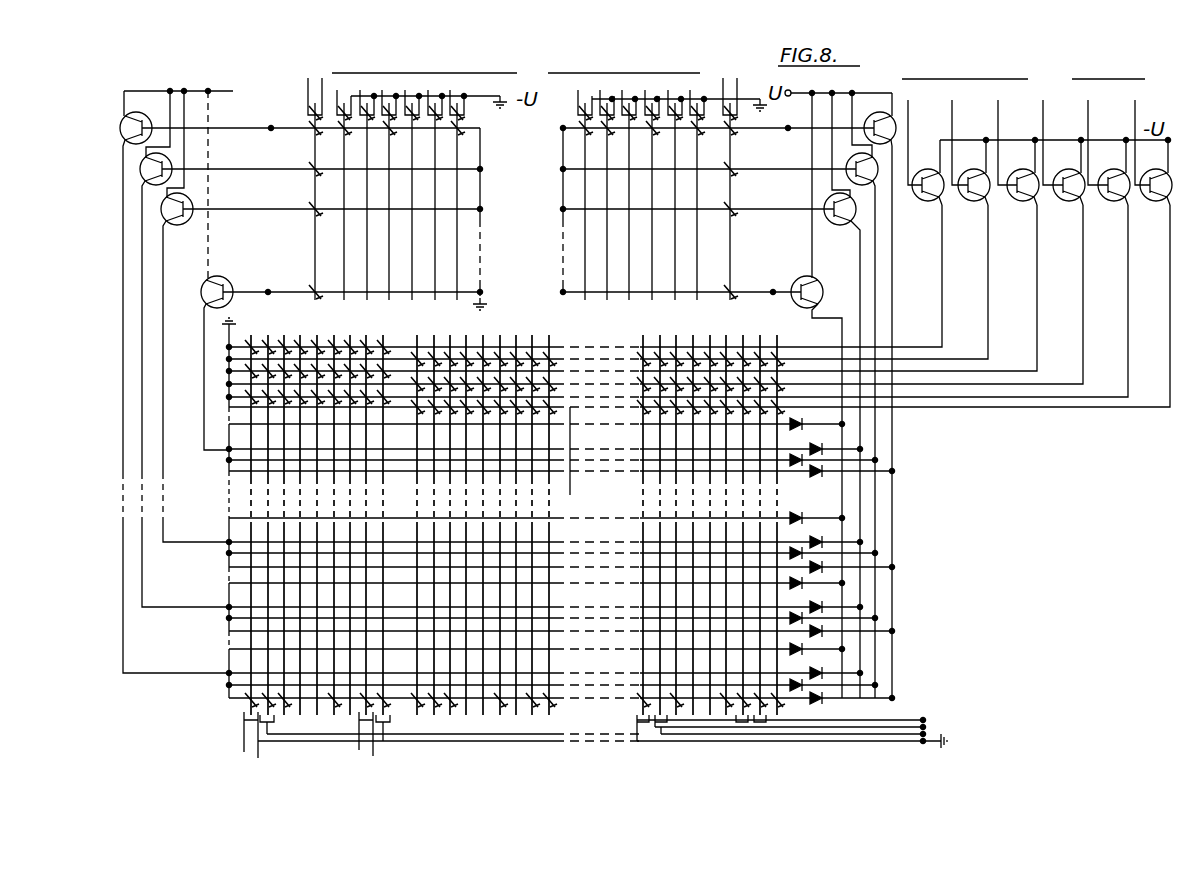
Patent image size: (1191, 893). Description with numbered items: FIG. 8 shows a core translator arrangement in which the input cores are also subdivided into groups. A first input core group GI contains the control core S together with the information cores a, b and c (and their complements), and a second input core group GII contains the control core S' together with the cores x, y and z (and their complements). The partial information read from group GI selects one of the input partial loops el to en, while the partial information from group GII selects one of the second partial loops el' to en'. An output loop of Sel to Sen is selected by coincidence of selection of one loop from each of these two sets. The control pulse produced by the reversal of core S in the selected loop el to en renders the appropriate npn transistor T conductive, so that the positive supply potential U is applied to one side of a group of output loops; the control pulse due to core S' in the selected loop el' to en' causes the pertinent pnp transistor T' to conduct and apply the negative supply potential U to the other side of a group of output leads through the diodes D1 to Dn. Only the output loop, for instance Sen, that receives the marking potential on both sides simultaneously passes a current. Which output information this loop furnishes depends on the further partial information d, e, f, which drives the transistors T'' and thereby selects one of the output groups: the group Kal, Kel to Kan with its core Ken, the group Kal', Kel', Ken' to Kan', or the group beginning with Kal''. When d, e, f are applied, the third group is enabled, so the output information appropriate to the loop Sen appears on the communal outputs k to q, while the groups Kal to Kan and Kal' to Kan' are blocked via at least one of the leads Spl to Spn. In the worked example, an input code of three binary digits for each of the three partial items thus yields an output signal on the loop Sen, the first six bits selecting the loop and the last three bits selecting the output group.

The supply potential U is at (196, 93).
The transistor T is at (182, 210).
The input partial loop el is at (316, 116).
The input partial loop en is at (356, 283).
The output core Ken is at (503, 219).
The first input core group GI is at (516, 77).
The control core S is at (311, 200).
The input core a is at (356, 184).
The input core b is at (400, 184).
The input core c is at (446, 184).
The input core x is at (596, 184).
The input core y is at (640, 184).
The input core z is at (685, 184).
The control core S' is at (731, 196).
The input partial loop el' is at (713, 117).
The input partial loop en' is at (677, 282).
The transistor T' is at (843, 210).
The second input core group GII is at (1023, 79).
The transistor T'' is at (1040, 199).
The input core d is at (929, 134).
The input core e is at (1021, 135).
The input core f is at (1111, 134).
The diode D1 is at (800, 427).
The diode Dn is at (562, 709).
The output core Kal is at (263, 512).
The output core Kel is at (316, 511).
The output core Kan is at (584, 514).
The output core Kal' is at (448, 512).
The output core Kan' is at (519, 514).
The output core Kel' is at (572, 509).
The output core Kal'' is at (654, 514).
The output core Ken' is at (711, 512).
The blocking lead Spl is at (620, 347).
The blocking lead Spn is at (572, 463).
The output loop Sel is at (590, 450).
The output loop Sen is at (567, 700).
The communal output k is at (248, 746).
The communal output q is at (362, 743).